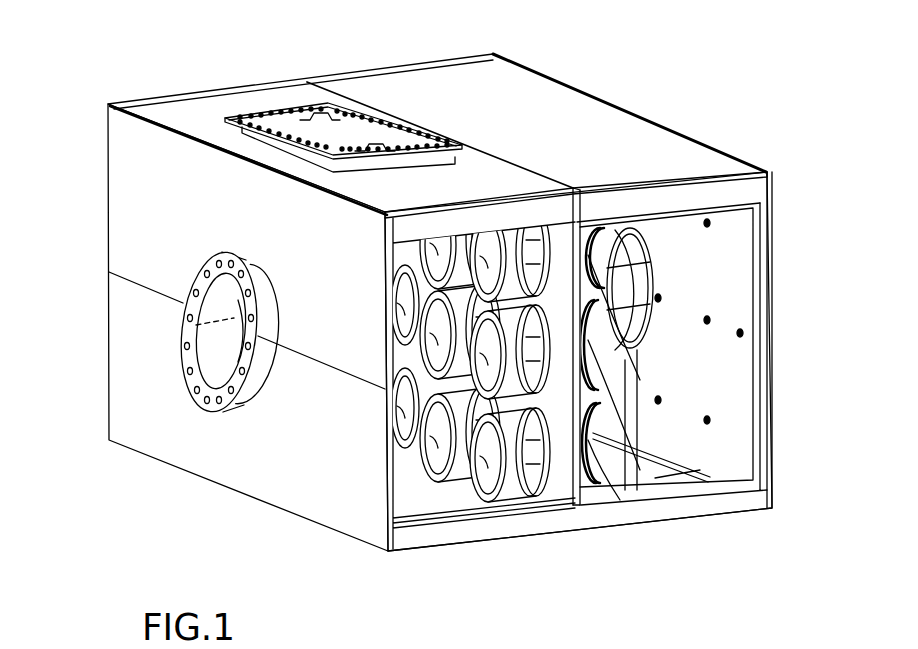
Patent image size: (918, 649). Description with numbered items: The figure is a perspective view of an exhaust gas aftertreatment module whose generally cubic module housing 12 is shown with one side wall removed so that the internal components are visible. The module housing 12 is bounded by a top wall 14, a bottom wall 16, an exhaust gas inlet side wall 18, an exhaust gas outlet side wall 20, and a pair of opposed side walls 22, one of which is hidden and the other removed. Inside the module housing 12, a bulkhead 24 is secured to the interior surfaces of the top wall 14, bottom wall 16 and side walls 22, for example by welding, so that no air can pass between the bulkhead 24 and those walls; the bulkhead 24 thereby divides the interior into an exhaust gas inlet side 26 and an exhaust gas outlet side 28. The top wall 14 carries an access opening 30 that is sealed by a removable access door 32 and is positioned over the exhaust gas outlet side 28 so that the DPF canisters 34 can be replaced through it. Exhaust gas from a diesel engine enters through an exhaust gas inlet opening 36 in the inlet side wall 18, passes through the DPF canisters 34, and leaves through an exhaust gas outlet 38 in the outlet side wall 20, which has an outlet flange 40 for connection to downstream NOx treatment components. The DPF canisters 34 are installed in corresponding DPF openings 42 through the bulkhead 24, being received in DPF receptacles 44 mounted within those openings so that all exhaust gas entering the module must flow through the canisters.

The aftertreatment module housing 12 is at (108, 232).
The top wall 14 is at (430, 78).
The bottom wall 16 is at (660, 475).
The exhaust gas inlet side wall 18 is at (738, 306).
The exhaust gas outlet side wall 20 is at (120, 432).
The opposed side walls 22 is at (752, 183).
The bulkhead 24 is at (573, 505).
The exhaust gas inlet side 26 is at (735, 420).
The exhaust gas outlet side 28 is at (420, 492).
The access opening 30 is at (273, 147).
The access door 32 is at (268, 120).
The DPF canisters 34 is at (520, 500).
The exhaust gas inlet opening 36 is at (665, 296).
The exhaust gas outlet 38 is at (270, 382).
The outlet flange 40 is at (213, 400).
The DPF openings 42 is at (590, 470).
The DPF receptacles 44 is at (625, 485).